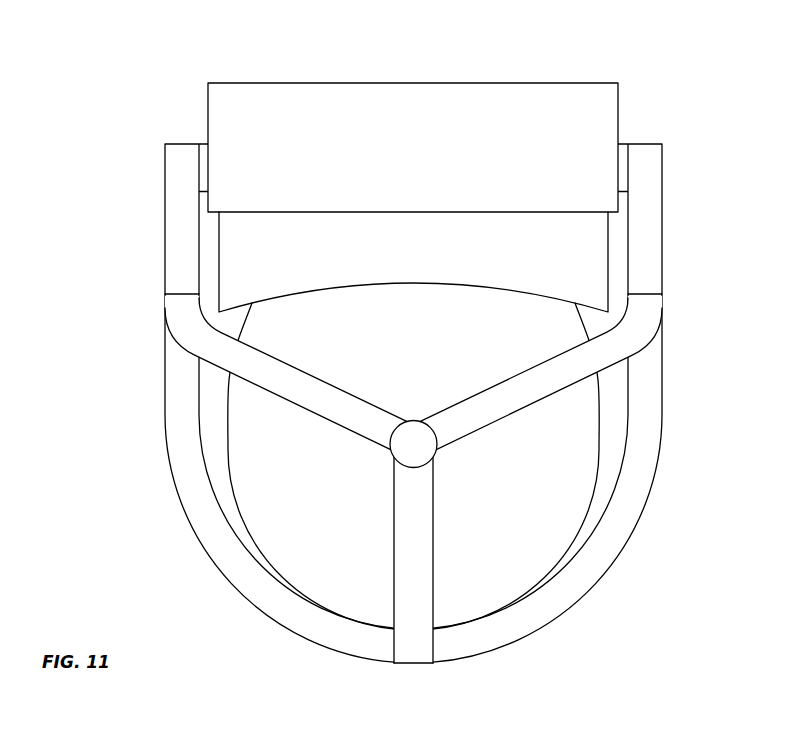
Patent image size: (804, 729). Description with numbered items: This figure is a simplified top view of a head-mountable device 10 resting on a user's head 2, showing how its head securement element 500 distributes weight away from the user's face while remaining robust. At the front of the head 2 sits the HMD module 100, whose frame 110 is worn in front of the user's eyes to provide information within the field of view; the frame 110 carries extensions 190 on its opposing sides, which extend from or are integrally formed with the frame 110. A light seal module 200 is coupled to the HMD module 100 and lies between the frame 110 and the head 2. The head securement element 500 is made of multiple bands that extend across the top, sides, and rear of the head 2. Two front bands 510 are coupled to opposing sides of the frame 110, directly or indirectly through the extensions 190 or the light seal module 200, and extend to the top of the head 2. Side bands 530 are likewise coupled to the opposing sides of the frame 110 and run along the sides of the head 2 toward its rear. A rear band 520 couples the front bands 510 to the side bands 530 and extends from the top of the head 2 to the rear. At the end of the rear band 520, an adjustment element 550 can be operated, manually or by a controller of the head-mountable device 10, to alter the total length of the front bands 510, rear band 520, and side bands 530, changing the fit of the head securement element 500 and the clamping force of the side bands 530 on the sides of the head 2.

The head-mountable device 10 is at (402, 363).
The HMD module 100 is at (370, 137).
The frame 110 is at (217, 110).
The extensions 190 is at (185, 212).
The light seal module 200 is at (235, 265).
The head securement element 500 is at (371, 507).
The front bands 510 is at (300, 395).
The rear band 520 is at (418, 604).
The side bands 530 is at (237, 588).
The adjustment element 550 is at (415, 652).
The head 2 is at (552, 532).